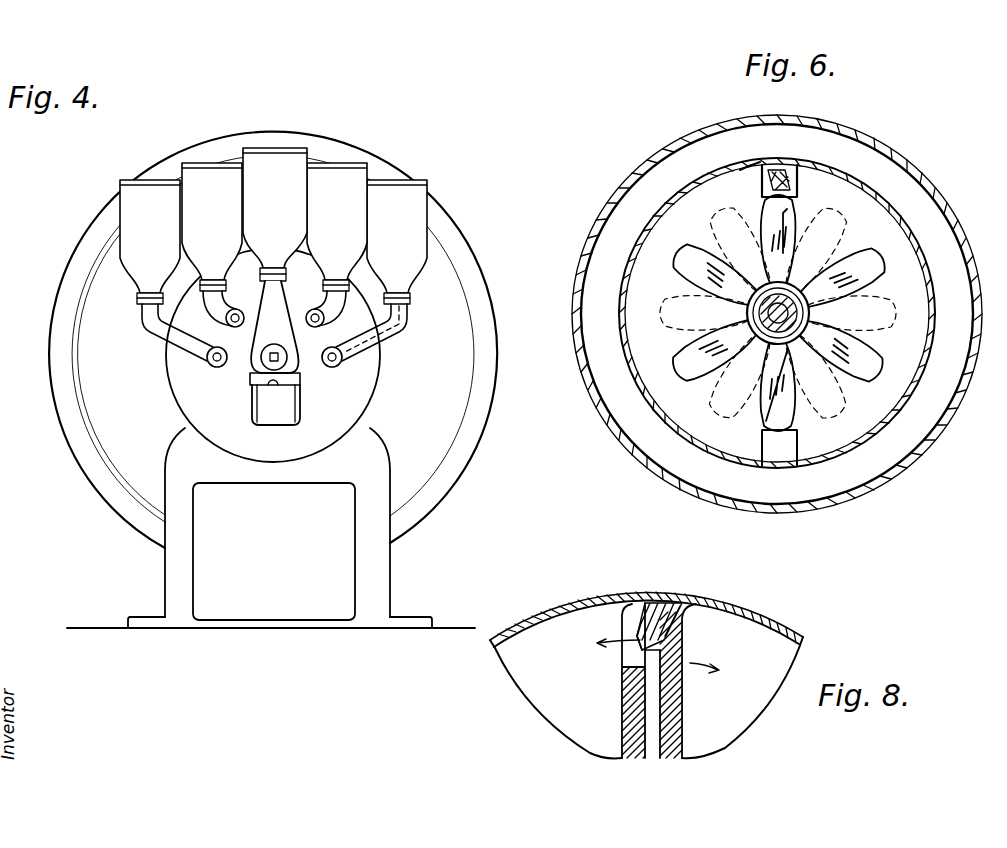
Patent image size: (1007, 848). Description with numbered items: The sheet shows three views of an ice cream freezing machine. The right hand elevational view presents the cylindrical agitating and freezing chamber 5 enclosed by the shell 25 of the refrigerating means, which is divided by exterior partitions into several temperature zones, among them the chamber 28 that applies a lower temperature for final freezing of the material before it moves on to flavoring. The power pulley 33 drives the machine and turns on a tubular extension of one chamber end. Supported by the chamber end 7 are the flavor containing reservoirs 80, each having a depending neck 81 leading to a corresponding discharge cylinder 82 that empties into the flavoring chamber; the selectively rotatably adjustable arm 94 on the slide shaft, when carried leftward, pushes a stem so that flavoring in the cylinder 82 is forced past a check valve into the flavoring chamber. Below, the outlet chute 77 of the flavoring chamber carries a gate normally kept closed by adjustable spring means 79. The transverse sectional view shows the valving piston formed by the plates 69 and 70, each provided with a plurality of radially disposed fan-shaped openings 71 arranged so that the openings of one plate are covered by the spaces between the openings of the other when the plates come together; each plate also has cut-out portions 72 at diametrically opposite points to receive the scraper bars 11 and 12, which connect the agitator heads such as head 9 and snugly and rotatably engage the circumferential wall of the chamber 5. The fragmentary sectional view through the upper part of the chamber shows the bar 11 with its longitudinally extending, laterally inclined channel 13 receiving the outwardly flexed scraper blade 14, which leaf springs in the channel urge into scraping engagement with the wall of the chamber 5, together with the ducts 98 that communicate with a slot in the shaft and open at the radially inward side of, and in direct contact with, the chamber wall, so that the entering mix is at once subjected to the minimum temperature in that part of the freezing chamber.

In FIG. 8, the cylindrical agitating and freezing chamber 5 is at (771, 609).
In FIG. 4, the chamber end 7 is at (378, 355).
In FIG. 4, the agitator head 9 is at (334, 386).
In FIG. 8, the agitator head 9 is at (548, 638).
In FIG. 6, the bar 11 is at (776, 182).
In FIG. 8, the bar 11 is at (724, 612).
In FIG. 6, the bar 12 is at (781, 462).
In FIG. 8, the channel 13 is at (640, 630).
In FIG. 8, the scraper blade 14 is at (670, 612).
In FIG. 6, the shell 25 is at (928, 471).
In FIG. 6, the chamber 28 is at (948, 228).
In FIG. 4, the power pulley 33 is at (497, 388).
In FIG. 6, the plate 69 is at (783, 213).
In FIG. 6, the plate 70 is at (843, 202).
In FIG. 6, the fan-shaped openings 71 is at (878, 252).
In FIG. 6, the cut-out portions 72 is at (742, 170).
In FIG. 4, the outlet chute 77 is at (278, 415).
In FIG. 4, the adjustable spring means 79 is at (270, 388).
In FIG. 4, the flavor containing reservoirs 80 is at (132, 190).
In FIG. 4, the depending neck 81 is at (158, 320).
In FIG. 4, the discharge cylinder 82 is at (214, 365).
In FIG. 4, the selectively rotatably adjustable arm 94 is at (274, 327).
In FIG. 8, the ducts 98 is at (650, 702).